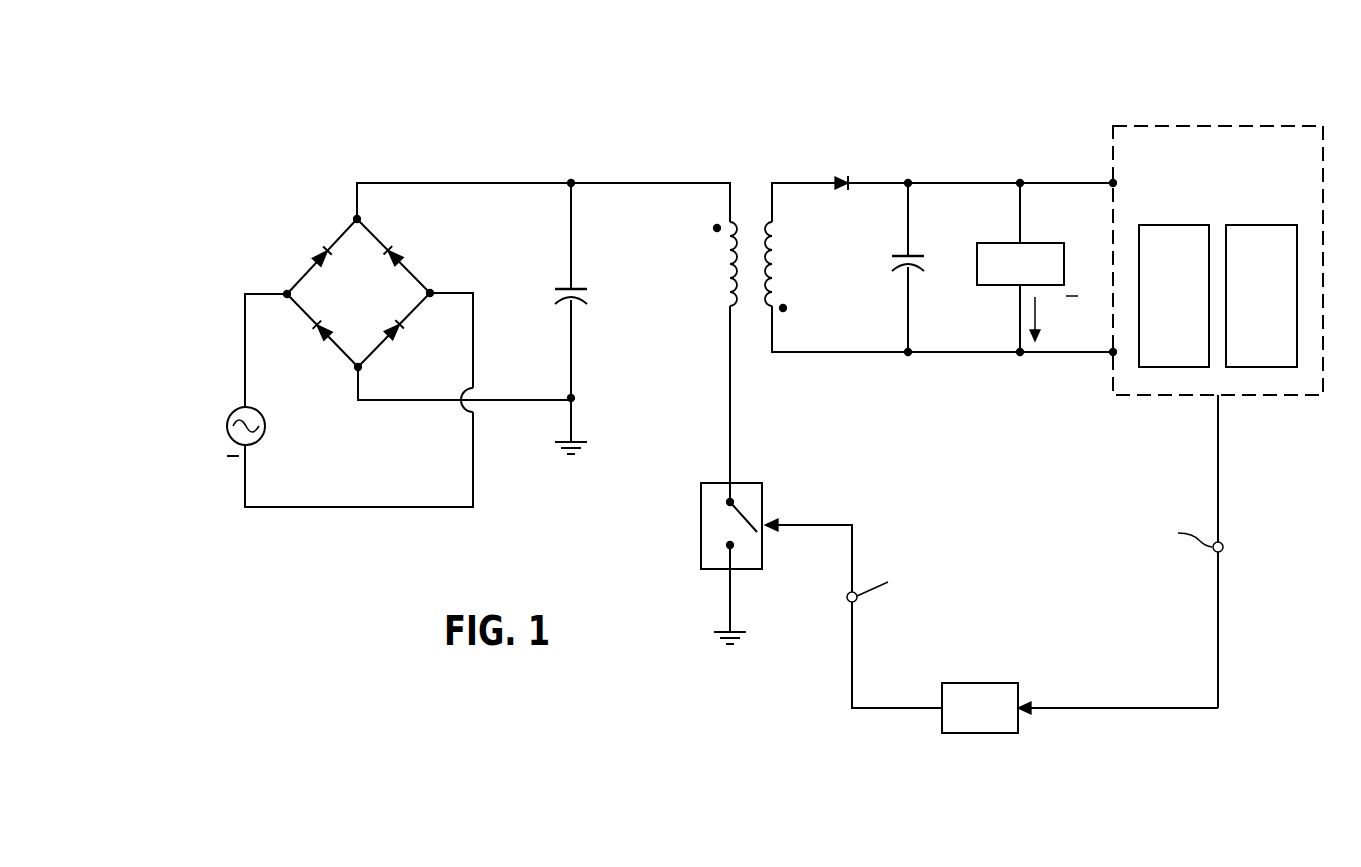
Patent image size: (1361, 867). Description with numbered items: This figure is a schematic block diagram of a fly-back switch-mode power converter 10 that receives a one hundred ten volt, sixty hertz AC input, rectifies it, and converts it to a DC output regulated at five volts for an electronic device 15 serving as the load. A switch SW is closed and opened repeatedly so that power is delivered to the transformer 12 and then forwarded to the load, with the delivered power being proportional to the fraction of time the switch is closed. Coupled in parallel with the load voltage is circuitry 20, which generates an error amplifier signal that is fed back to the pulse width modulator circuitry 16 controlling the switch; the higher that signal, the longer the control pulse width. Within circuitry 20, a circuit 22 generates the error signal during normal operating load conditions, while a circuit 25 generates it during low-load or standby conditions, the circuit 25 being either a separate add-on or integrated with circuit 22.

The fly-back switch-mode power converter 10 is at (513, 72).
The transformer 12 is at (759, 169).
The electronic device 15 is at (997, 243).
The pulse width modulator circuitry 16 is at (983, 683).
The circuitry 20 is at (1207, 126).
The circuit 22 is at (1172, 225).
The circuit 25 is at (1262, 225).